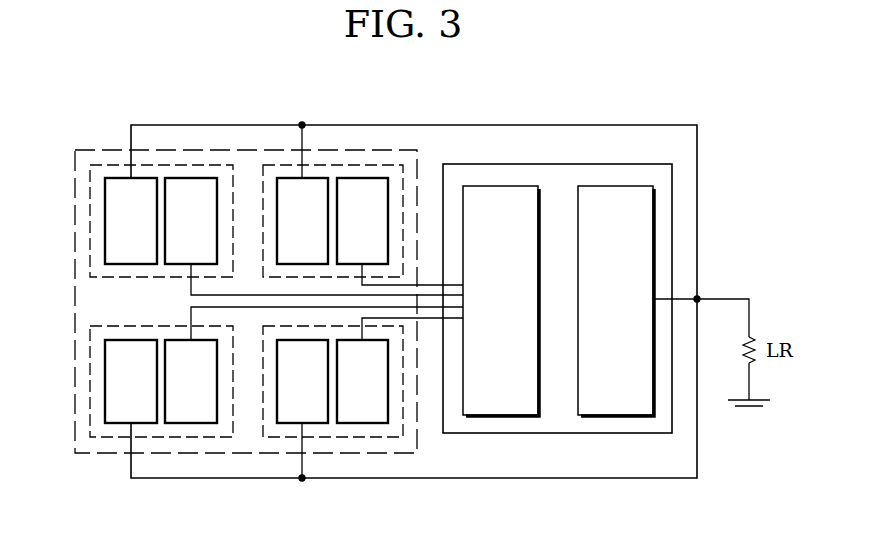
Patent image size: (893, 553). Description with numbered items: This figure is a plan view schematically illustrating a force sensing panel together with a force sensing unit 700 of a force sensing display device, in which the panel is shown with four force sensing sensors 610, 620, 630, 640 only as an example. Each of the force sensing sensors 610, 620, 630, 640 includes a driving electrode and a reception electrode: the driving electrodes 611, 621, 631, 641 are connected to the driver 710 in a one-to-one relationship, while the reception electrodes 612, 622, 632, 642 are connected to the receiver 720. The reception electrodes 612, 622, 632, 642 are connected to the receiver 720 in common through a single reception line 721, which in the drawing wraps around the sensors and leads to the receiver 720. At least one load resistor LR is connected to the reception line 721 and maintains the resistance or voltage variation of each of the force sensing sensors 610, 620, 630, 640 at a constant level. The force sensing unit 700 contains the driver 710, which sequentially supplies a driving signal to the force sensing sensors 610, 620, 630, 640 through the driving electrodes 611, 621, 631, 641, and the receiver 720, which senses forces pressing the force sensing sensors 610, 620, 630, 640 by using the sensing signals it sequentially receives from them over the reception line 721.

The force sensing sensor 610 is at (105, 165).
The driving electrode 611 is at (175, 231).
The reception electrode 612 is at (115, 231).
The force sensing sensor 620 is at (278, 165).
The driving electrode 621 is at (346, 231).
The reception electrode 622 is at (286, 231).
The force sensing sensor 630 is at (105, 437).
The driving electrode 631 is at (175, 392).
The reception electrode 632 is at (115, 392).
The force sensing sensor 640 is at (278, 437).
The driving electrode 641 is at (346, 392).
The reception electrode 642 is at (286, 392).
The force sensing unit 700 is at (603, 163).
The driver 710 is at (484, 310).
The receiver 720 is at (632, 310).
The reception line 721 is at (575, 479).